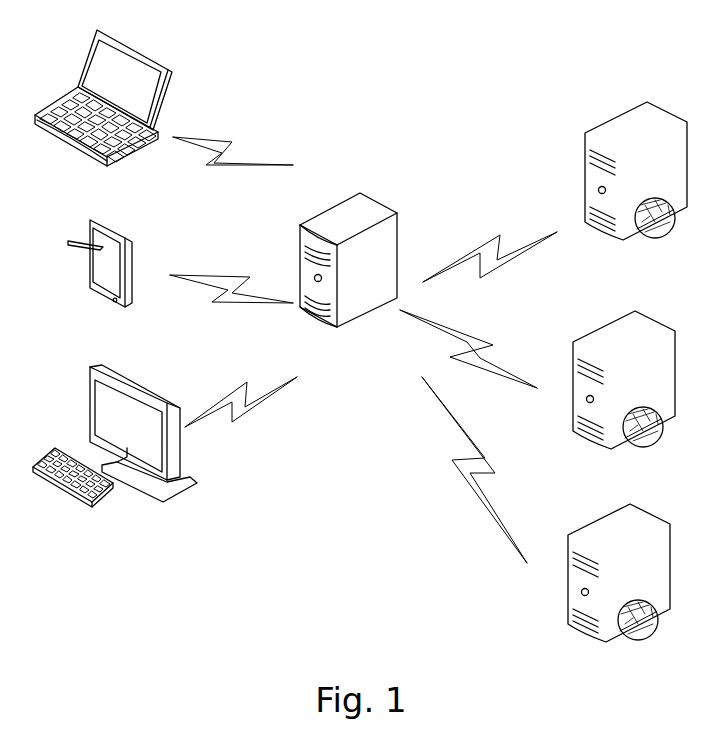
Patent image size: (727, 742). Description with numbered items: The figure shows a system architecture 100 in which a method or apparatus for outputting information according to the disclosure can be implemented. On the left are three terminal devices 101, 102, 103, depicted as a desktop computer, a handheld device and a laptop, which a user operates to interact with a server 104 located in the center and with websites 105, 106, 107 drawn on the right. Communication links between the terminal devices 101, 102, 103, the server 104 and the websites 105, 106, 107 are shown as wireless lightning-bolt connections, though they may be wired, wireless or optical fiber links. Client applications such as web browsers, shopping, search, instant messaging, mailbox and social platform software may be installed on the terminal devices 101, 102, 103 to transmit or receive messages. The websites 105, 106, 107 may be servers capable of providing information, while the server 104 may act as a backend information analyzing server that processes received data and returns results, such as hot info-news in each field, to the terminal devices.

The system architecture 100 is at (670, 42).
The terminal device 101 is at (115, 459).
The terminal device 102 is at (100, 280).
The terminal device 103 is at (103, 114).
The server 104 is at (348, 284).
The website 105 is at (636, 191).
The website 106 is at (624, 395).
The website 107 is at (619, 600).